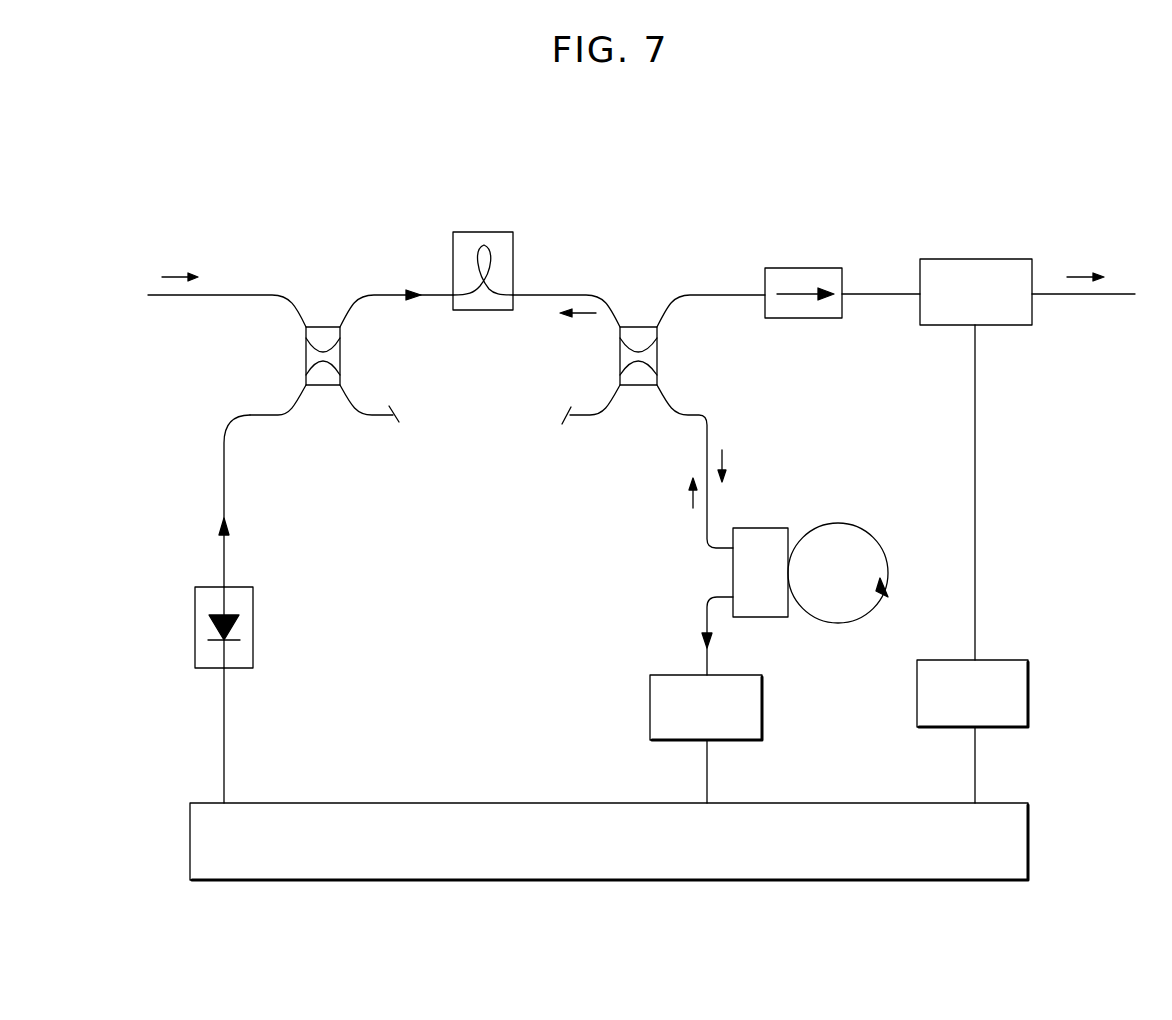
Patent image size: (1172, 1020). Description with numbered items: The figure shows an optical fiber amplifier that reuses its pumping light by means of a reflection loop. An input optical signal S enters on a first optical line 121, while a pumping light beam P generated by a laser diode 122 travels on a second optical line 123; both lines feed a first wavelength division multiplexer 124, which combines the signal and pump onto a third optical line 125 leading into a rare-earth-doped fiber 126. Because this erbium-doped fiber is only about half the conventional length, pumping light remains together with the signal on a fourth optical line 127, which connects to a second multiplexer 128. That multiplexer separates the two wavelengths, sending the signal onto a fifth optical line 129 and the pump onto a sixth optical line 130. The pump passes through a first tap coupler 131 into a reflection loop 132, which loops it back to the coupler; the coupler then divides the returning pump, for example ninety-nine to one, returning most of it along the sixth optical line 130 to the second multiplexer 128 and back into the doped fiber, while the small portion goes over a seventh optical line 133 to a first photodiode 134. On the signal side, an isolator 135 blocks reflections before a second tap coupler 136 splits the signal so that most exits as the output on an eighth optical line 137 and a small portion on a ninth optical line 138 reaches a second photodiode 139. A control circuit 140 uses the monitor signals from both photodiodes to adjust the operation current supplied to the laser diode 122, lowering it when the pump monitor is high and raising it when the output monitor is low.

The first optical line 121 is at (245, 293).
The laser diode 122 is at (258, 630).
The second optical line 123 is at (228, 496).
The first wavelength division multiplexer 124 is at (322, 327).
The third optical line 125 is at (389, 298).
The rare-earth-doped fiber 126 is at (492, 232).
The fourth optical line 127 is at (565, 290).
The second multiplexer 128 is at (635, 327).
The fifth optical line 129 is at (722, 293).
The sixth optical line 130 is at (687, 413).
The first tap coupler 131 is at (768, 528).
The reflection loop 132 is at (853, 532).
The seventh optical line 133 is at (703, 613).
The first photodiode 134 is at (649, 700).
The isolator 135 is at (810, 268).
The second tap coupler 136 is at (975, 259).
The eighth optical line 137 is at (1093, 296).
The ninth optical line 138 is at (978, 521).
The second photodiode 139 is at (915, 700).
The control circuit 140 is at (440, 802).